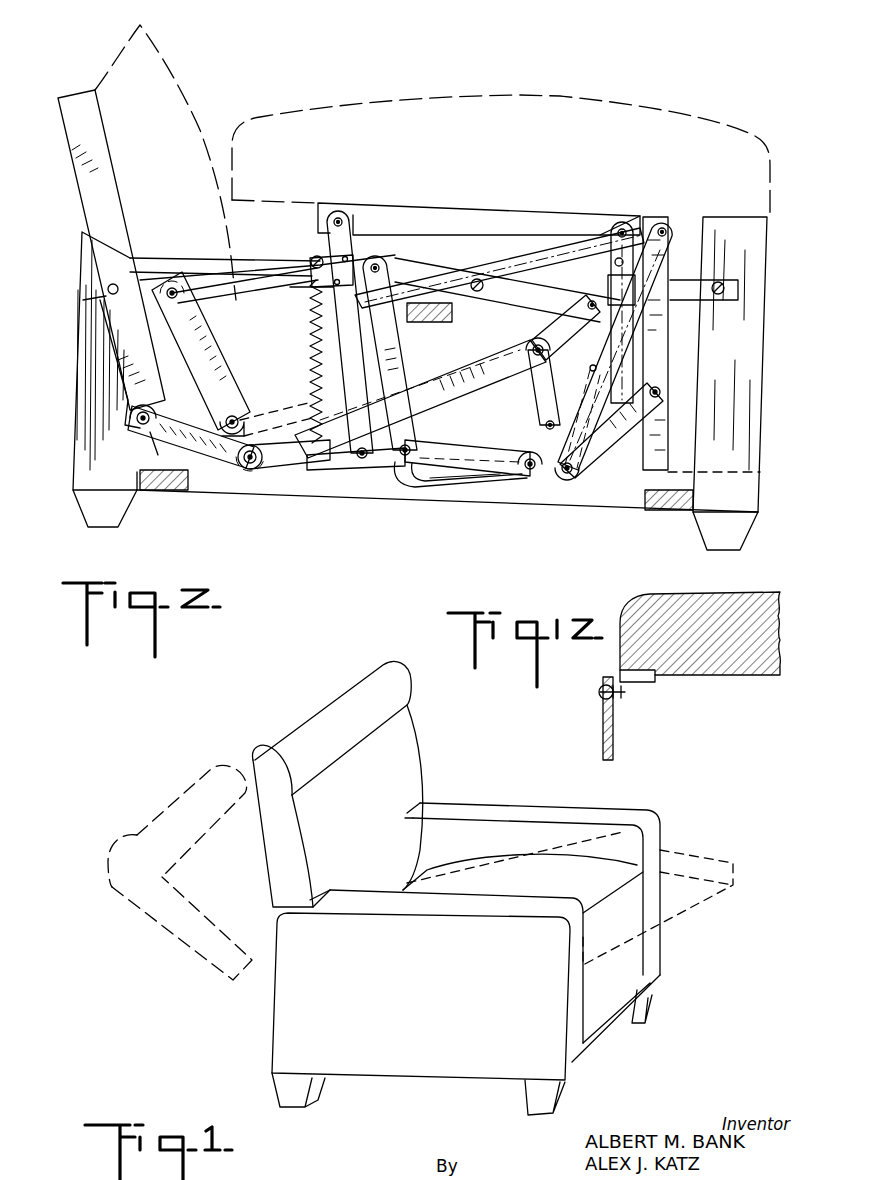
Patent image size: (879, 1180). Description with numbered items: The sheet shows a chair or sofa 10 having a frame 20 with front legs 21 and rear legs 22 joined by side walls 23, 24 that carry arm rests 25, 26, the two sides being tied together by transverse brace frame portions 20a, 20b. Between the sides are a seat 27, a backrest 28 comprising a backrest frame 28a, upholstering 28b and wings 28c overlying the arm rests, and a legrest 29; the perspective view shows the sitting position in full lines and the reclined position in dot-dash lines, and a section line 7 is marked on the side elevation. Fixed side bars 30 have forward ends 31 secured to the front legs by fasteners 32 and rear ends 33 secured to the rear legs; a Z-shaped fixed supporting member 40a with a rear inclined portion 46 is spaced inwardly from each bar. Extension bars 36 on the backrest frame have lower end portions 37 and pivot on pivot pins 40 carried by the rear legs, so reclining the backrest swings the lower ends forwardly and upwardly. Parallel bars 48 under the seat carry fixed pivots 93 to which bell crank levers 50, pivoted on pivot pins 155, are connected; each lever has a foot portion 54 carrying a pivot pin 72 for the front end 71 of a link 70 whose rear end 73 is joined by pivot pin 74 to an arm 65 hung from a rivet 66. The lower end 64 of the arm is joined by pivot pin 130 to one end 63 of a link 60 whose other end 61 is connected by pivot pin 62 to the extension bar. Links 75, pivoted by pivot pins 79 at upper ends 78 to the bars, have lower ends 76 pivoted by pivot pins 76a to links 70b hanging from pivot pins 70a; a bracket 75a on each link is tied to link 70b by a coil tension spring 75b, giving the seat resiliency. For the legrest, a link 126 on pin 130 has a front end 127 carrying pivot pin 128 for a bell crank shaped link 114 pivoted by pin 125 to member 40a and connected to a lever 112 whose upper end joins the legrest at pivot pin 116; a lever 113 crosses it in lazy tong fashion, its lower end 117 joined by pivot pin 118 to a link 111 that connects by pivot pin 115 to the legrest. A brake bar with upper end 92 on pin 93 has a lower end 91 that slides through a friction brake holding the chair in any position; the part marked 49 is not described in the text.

In FIG. 2, the section line 7- 7 is at (82, 118).
In FIG. 2, the chair 10 is at (279, 92).
In FIG. 2, the frame 20 is at (242, 255).
In FIG. 2, the transverse brace frame portion 20a is at (668, 508).
In FIG. 2, the transverse brace frame portion 20b is at (452, 322).
In FIG. 2, the front legs 21 is at (752, 500).
In FIG. 1, the front legs 21 is at (652, 1004).
In FIG. 2, the rear legs 22 is at (82, 392).
In FIG. 1, the rear legs 22 is at (284, 1087).
In FIG. 1, the side wall 23 is at (662, 826).
In FIG. 1, the side wall 24 is at (428, 1058).
In FIG. 1, the arm rest 25 is at (512, 815).
In FIG. 1, the arm rest 26 is at (416, 912).
In FIG. 2, the seat 27 is at (498, 96).
In FIG. 1, the seat 27 is at (547, 860).
In FIG. 2, the backrest 28 is at (200, 125).
In FIG. 1, the backrest 28 is at (376, 802).
In FIG. 2, the backrest frame 28a is at (127, 350).
In FIG. 2, the upholstering 28b is at (216, 60).
In FIG. 1, the wings 28c is at (418, 755).
In FIG. 12, the legrest 29 is at (728, 610).
In FIG. 1, the legrest 29 is at (712, 916).
In FIG. 2, the side bars 30 is at (695, 302).
In FIG. 2, the forward ends of side bars 31 is at (762, 282).
In FIG. 2, the fasteners 32 is at (720, 282).
In FIG. 2, the rear ends of side bars 33 is at (150, 258).
In FIG. 2, the extension bars 36 is at (92, 198).
In FIG. 2, the lower end portions of extension bars 37 is at (128, 400).
In FIG. 2, the pivot pins 40 is at (84, 303).
In FIG. 2, the Z-shaped fixed supporting member 40a is at (482, 305).
In FIG. 2, the rear inclined portion 46 is at (245, 295).
In FIG. 2, the parallel bars 48 is at (446, 218).
In FIG. 2, the brace 49 is at (592, 212).
In FIG. 2, the bell crank levers 50 is at (416, 380).
In FIG. 2, the foot portion 54 is at (512, 480).
In FIG. 2, the link 60 is at (204, 428).
In FIG. 2, the end of link 61 is at (165, 440).
In FIG. 2, the pivot pin 62 is at (158, 412).
In FIG. 2, the end of link 63 is at (250, 470).
In FIG. 2, the lower end of arm 64 is at (262, 466).
In FIG. 2, the arm 65 is at (222, 352).
In FIG. 2, the rivets 66 is at (188, 298).
In FIG. 2, the link 70 is at (476, 452).
In FIG. 2, the pivot pins 70a is at (420, 446).
In FIG. 2, the links 70b is at (330, 472).
In FIG. 2, the front end of link 71 is at (500, 455).
In FIG. 2, the pivot pins 72 is at (530, 458).
In FIG. 2, the rear end of link 73 is at (260, 425).
In FIG. 2, the pivot pin 74 is at (242, 418).
In FIG. 2, the links 75 is at (338, 388).
In FIG. 2, the bracket 75a is at (291, 248).
In FIG. 2, the coil tension spring 75b is at (316, 358).
In FIG. 2, the lower ends of links 76 is at (382, 466).
In FIG. 2, the pivot pins 76a is at (362, 472).
In FIG. 2, the upper ends of links 78 is at (340, 238).
In FIG. 2, the pivot pins 79 is at (330, 220).
In FIG. 2, the lower end of bar 91 is at (623, 367).
In FIG. 2, the upper end of bar 92 is at (622, 228).
In FIG. 2, the fixed pivot 93 is at (652, 228).
In FIG. 2, the link 111 is at (611, 430).
In FIG. 2, the lever 112 is at (656, 262).
In FIG. 12, the lever 112 is at (604, 740).
In FIG. 2, the lever 113 is at (586, 415).
In FIG. 2, the bell crank shaped link 114 is at (555, 382).
In FIG. 2, the pivot pin 115 is at (678, 392).
In FIG. 2, the pivot pin 116 is at (668, 230).
In FIG. 12, the pivot pin 116 is at (628, 692).
In FIG. 2, the lower end of lever 117 is at (572, 478).
In FIG. 2, the pivot pin 118 is at (575, 473).
In FIG. 2, the pivot pin 125 is at (588, 308).
In FIG. 2, the link 126 is at (436, 395).
In FIG. 2, the front end of link 127 is at (488, 414).
In FIG. 2, the pivot pin 128 is at (550, 352).
In FIG. 2, the pivot pin 130 is at (245, 466).
In FIG. 2, the pivot pins 155 is at (376, 264).